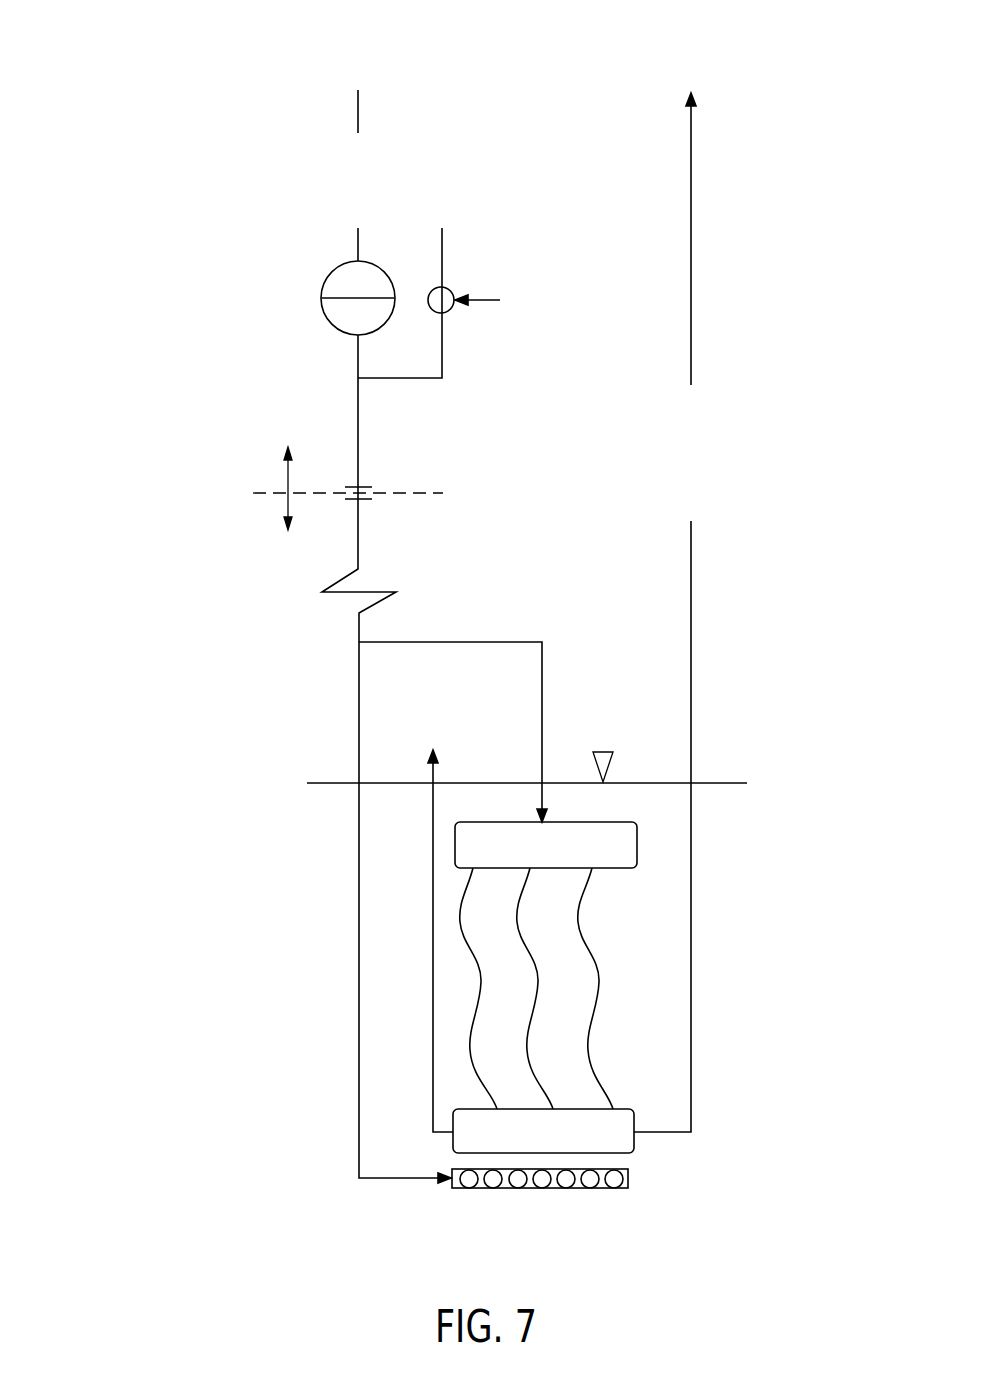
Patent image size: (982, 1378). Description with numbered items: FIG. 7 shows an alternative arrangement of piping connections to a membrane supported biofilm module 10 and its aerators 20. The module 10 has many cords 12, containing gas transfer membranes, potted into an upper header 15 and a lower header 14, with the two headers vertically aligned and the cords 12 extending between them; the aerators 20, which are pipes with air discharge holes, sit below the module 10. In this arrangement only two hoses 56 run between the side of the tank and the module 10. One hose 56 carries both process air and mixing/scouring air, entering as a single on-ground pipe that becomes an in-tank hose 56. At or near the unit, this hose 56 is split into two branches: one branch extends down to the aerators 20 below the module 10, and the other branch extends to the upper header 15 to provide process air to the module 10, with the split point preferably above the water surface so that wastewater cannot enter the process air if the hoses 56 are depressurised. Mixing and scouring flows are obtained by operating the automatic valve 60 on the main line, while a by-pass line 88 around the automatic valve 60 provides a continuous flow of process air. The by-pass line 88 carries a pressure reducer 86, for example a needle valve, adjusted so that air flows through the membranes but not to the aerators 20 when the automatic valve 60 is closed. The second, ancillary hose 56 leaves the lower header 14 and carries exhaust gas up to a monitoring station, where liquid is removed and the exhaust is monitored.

The module 10 is at (233, 72).
The cords 12 is at (597, 972).
The header 14 is at (635, 1142).
The upper header 15 is at (637, 838).
The aerators 20 is at (567, 1192).
The hoses 56 is at (359, 438).
The automatic valve 60 is at (332, 270).
The pressure reducer 86 is at (449, 280).
The by-pass line 88 is at (443, 338).